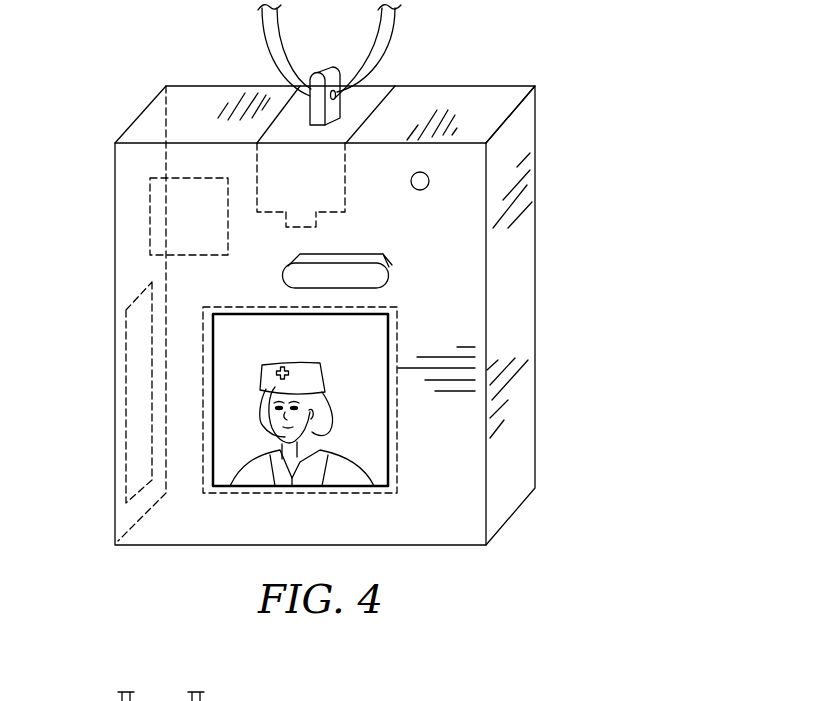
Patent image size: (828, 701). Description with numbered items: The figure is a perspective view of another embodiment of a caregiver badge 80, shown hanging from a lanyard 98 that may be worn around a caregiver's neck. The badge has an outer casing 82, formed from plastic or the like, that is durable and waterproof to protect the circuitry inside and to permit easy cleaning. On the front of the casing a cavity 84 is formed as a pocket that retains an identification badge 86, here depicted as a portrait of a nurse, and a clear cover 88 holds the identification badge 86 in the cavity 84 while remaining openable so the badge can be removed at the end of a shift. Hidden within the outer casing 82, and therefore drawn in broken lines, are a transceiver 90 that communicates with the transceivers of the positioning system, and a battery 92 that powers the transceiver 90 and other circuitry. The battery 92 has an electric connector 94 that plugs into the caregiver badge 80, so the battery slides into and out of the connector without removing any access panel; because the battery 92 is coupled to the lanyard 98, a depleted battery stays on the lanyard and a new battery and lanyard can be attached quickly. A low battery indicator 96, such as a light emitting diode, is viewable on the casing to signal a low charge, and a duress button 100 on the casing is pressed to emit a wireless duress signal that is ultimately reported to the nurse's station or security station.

The caregiver badge 80 is at (592, 171).
The outer casing 82 is at (515, 275).
The cavity 84 is at (372, 432).
The identification badge 86 is at (233, 438).
The clear cover 88 is at (233, 365).
The transceiver 90 is at (168, 218).
The battery 92 is at (285, 180).
The electric connector 94 is at (346, 212).
The low battery indicator 96 is at (429, 181).
The lanyard 98 is at (393, 35).
The duress button 100 is at (393, 263).